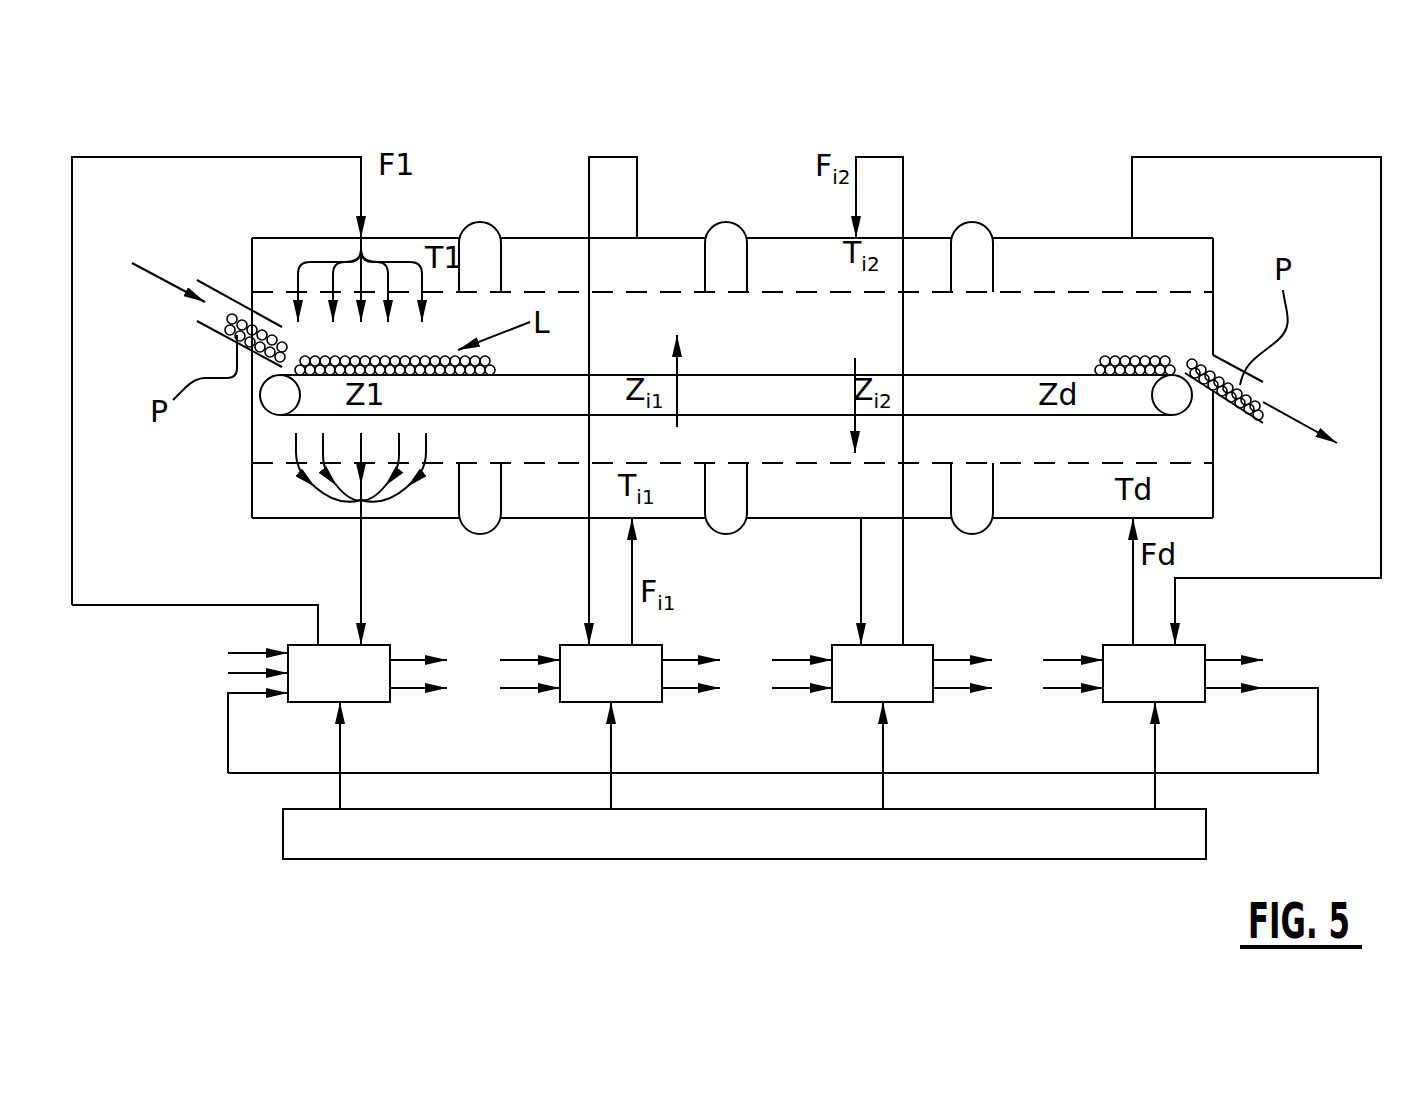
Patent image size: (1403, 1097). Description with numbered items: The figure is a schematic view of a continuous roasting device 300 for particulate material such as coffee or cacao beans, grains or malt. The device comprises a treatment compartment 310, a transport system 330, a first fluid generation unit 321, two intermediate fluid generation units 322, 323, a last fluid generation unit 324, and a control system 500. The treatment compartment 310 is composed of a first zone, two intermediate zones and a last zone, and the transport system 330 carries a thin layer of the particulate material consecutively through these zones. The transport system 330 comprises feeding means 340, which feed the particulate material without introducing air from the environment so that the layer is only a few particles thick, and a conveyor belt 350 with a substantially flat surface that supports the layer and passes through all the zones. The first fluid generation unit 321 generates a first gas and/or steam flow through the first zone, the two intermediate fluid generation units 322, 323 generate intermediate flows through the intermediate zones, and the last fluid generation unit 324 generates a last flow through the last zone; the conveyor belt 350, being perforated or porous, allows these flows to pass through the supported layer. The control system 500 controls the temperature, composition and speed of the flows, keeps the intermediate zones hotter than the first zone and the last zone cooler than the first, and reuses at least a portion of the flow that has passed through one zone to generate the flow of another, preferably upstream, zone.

The continuous roasting device 300 is at (300, 125).
The treatment compartment 310 is at (1225, 228).
The first fluid generation unit 321 is at (365, 702).
The intermediate fluid generation unit 322 is at (640, 702).
The intermediate fluid generation unit 323 is at (910, 702).
The last fluid generation unit 324 is at (1180, 702).
The transport system 330 is at (320, 402).
The feeding means 340 is at (228, 277).
The conveyor belt 350 is at (510, 395).
The control system 500 is at (1197, 833).